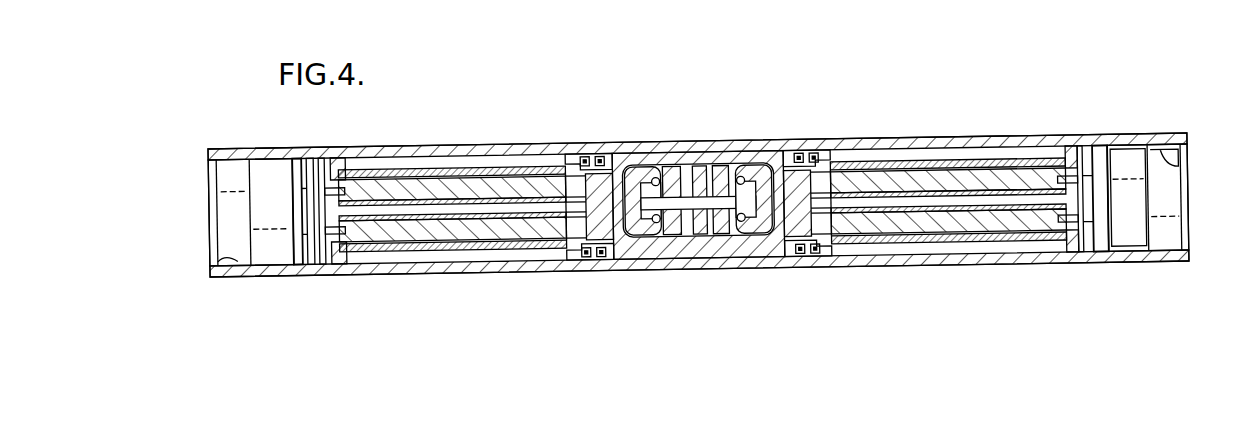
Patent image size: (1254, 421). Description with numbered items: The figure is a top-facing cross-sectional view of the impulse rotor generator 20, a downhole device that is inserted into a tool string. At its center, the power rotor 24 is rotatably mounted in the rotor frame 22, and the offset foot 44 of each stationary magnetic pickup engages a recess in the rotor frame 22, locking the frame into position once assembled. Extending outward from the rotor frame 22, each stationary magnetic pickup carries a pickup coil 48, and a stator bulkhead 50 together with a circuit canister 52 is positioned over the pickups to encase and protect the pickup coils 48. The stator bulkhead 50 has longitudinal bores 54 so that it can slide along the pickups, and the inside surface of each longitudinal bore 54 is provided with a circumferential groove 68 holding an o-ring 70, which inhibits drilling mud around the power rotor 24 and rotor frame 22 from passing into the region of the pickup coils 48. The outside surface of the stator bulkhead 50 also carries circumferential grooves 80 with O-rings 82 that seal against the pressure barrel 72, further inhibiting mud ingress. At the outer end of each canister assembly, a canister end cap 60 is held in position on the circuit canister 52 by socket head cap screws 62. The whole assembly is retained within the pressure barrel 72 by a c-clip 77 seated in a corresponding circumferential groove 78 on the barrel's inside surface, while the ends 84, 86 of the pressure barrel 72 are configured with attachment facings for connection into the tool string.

The impulse rotor generator 20 is at (759, 97).
The rotor frame 22 is at (768, 165).
The power rotor 24 is at (742, 265).
The offset foot 44 is at (742, 160).
The pickup coil 48 is at (516, 180).
The stator bulkhead 50 is at (605, 160).
The circuit canister 52 is at (456, 169).
The longitudinal bore 54 is at (589, 163).
The canister end cap 60 is at (1082, 256).
The socket head cap screw 62 is at (310, 258).
The circumferential groove 68 is at (576, 252).
The o-ring 70 is at (607, 255).
The pressure barrel 72 is at (898, 258).
The c-clip 77 is at (293, 160).
The circumferential groove 78 is at (311, 160).
The circumferential groove 80 is at (830, 163).
The O-ring 82 is at (815, 160).
The end of pressure barrel 84 is at (216, 262).
The end of pressure barrel 86 is at (1187, 152).